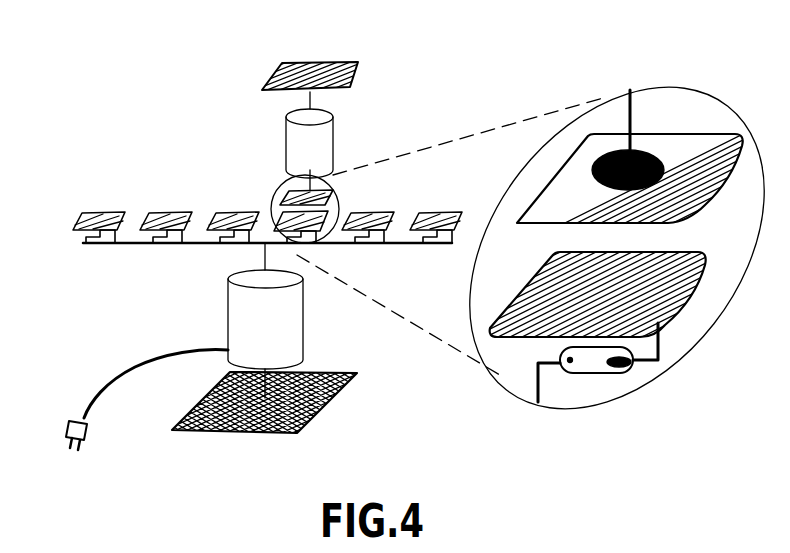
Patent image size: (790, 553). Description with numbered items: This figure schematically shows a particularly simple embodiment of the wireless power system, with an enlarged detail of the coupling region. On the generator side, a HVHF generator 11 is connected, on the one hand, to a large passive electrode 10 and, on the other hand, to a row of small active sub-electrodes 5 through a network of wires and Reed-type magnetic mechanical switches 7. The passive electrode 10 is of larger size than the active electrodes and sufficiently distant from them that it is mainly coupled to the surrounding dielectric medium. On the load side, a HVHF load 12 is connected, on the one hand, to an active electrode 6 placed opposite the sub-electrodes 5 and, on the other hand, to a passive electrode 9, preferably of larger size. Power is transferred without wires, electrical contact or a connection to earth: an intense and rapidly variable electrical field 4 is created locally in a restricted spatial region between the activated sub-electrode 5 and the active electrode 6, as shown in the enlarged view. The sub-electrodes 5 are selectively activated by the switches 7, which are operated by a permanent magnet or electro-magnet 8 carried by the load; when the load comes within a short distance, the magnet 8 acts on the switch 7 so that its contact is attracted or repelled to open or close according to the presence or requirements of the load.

The electrical field 4 is at (552, 140).
The sub-electrodes 5 is at (215, 212).
The active electrode 6 is at (680, 137).
The switches 7 is at (217, 240).
The magnet 8 is at (640, 153).
The passive electrode 9 is at (273, 70).
The passive electrode 10 is at (317, 415).
The HVHF generator 11 is at (238, 307).
The HVHF load 12 is at (300, 142).